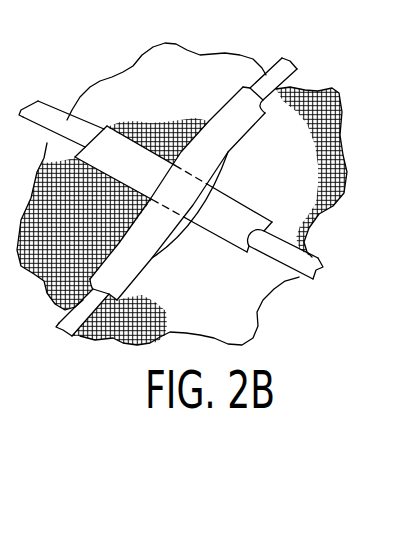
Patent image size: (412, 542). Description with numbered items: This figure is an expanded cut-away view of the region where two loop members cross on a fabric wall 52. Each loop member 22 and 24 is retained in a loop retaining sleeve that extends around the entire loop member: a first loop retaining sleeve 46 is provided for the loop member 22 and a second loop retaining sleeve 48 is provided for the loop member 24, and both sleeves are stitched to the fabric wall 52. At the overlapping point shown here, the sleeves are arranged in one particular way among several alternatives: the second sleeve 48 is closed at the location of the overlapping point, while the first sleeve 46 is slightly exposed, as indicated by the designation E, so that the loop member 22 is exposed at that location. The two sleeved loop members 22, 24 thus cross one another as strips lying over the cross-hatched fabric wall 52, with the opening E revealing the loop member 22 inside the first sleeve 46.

The loop member 22 is at (288, 61).
The loop member 24 is at (320, 258).
The first loop retaining sleeve 46 is at (128, 272).
The second loop retaining sleeve 48 is at (117, 150).
The fabric wall 52 is at (199, 95).
The exposed portion designation E is at (222, 172).